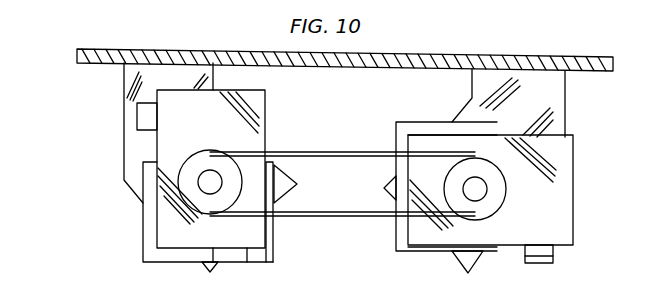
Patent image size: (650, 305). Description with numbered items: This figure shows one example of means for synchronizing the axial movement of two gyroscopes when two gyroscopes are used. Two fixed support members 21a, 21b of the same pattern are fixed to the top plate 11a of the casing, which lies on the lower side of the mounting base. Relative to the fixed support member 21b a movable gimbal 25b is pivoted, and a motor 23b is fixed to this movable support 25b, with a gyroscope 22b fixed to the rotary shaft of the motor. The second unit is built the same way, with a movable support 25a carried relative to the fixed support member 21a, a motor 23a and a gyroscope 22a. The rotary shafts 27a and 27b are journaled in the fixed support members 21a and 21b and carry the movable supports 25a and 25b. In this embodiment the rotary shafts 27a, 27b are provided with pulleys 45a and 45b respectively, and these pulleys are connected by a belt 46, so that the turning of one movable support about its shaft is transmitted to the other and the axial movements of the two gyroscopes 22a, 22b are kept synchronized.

The top plate 11a is at (503, 57).
The fixed support member 21b is at (124, 82).
The motor 23b is at (137, 117).
The movable gimbal 25b is at (160, 152).
The gyroscope 22b is at (273, 235).
The pulley 45b is at (197, 165).
The rotary shaft 27b is at (210, 192).
The belt 46 is at (338, 152).
The fixed support member 21a is at (545, 99).
The gyroscope 22a is at (395, 243).
The movable support 25a is at (566, 218).
The motor 23a is at (540, 263).
The pulley 45a is at (494, 190).
The rotary shaft 27a is at (482, 194).